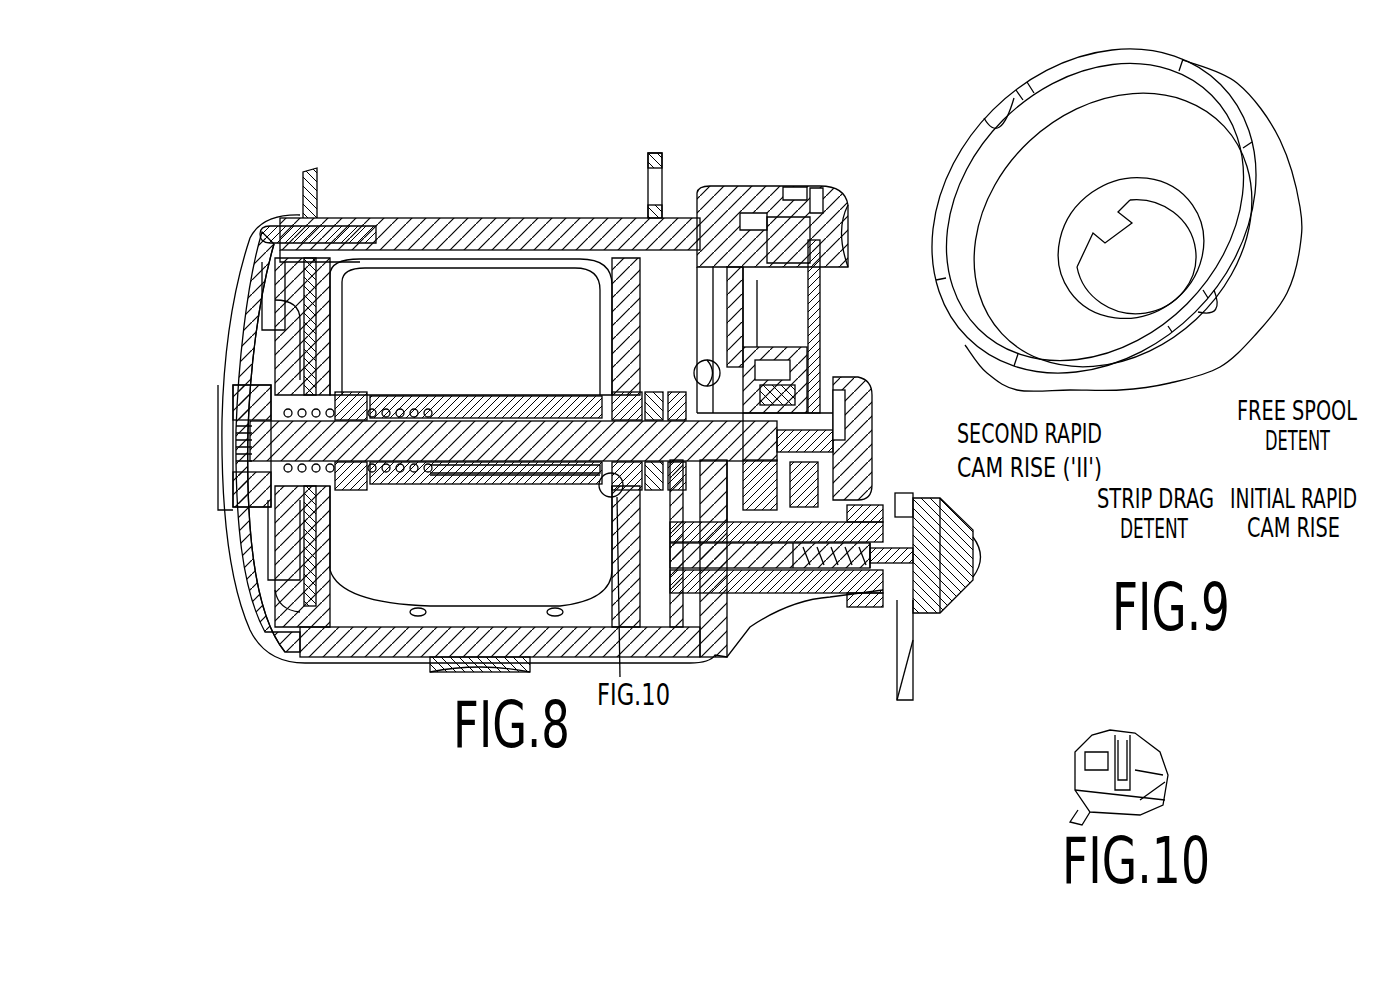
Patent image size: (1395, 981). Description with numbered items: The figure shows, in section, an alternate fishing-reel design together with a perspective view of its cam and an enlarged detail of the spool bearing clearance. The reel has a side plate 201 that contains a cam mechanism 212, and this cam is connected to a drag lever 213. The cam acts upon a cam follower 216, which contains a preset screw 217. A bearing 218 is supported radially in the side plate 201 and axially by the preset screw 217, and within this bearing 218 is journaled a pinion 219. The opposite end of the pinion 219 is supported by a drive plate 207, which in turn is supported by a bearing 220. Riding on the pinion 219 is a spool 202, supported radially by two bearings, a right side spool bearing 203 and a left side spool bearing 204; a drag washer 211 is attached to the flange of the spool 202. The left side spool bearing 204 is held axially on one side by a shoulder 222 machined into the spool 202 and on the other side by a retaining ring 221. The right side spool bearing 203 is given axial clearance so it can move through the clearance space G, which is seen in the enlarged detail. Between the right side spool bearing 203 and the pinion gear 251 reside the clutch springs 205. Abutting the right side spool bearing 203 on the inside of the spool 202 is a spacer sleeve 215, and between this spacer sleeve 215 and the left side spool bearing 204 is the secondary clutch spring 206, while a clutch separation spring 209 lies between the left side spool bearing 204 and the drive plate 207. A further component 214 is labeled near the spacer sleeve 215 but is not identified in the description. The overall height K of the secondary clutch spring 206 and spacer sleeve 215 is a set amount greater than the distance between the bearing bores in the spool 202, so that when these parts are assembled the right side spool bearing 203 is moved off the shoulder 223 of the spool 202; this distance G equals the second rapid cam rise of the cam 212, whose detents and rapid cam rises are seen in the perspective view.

In FIG. 8, the side plate 201 is at (745, 668).
In FIG. 8, the spool 202 is at (530, 372).
In FIG. 8, the right side spool bearing 203 is at (625, 403).
In FIG. 10, the right side spool bearing 203 is at (1128, 765).
In FIG. 8, the left side spool bearing 204 is at (333, 395).
In FIG. 8, the clutch springs 205 is at (627, 393).
In FIG. 8, the secondary clutch spring 206 is at (397, 410).
In FIG. 8, the drive plate 207 is at (267, 308).
In FIG. 8, the clutch separation spring 209 is at (307, 410).
In FIG. 8, the drag washer 211 is at (307, 568).
In FIG. 8, the cam mechanism 212 is at (793, 393).
In FIG. 8, the drag lever 213 is at (822, 300).
In FIG. 8, the spool hub sleeve 214 is at (460, 463).
In FIG. 8, the spacer sleeve 215 is at (537, 467).
In FIG. 8, the cam follower 216 is at (825, 556).
In FIG. 8, the preset screw 217 is at (800, 410).
In FIG. 8, the bearing 218 is at (750, 393).
In FIG. 8, the pinion 219 is at (490, 463).
In FIG. 8, the bearing 220 is at (232, 407).
In FIG. 8, the retaining ring 221 is at (308, 300).
In FIG. 8, the shoulder 222 is at (363, 397).
In FIG. 10, the shoulder 223 is at (1100, 792).
In FIG. 8, the pinion gear 251 is at (683, 390).
In FIG. 8, the overall height K is at (367, 50).
In FIG. 10, the clearance space G is at (1085, 713).